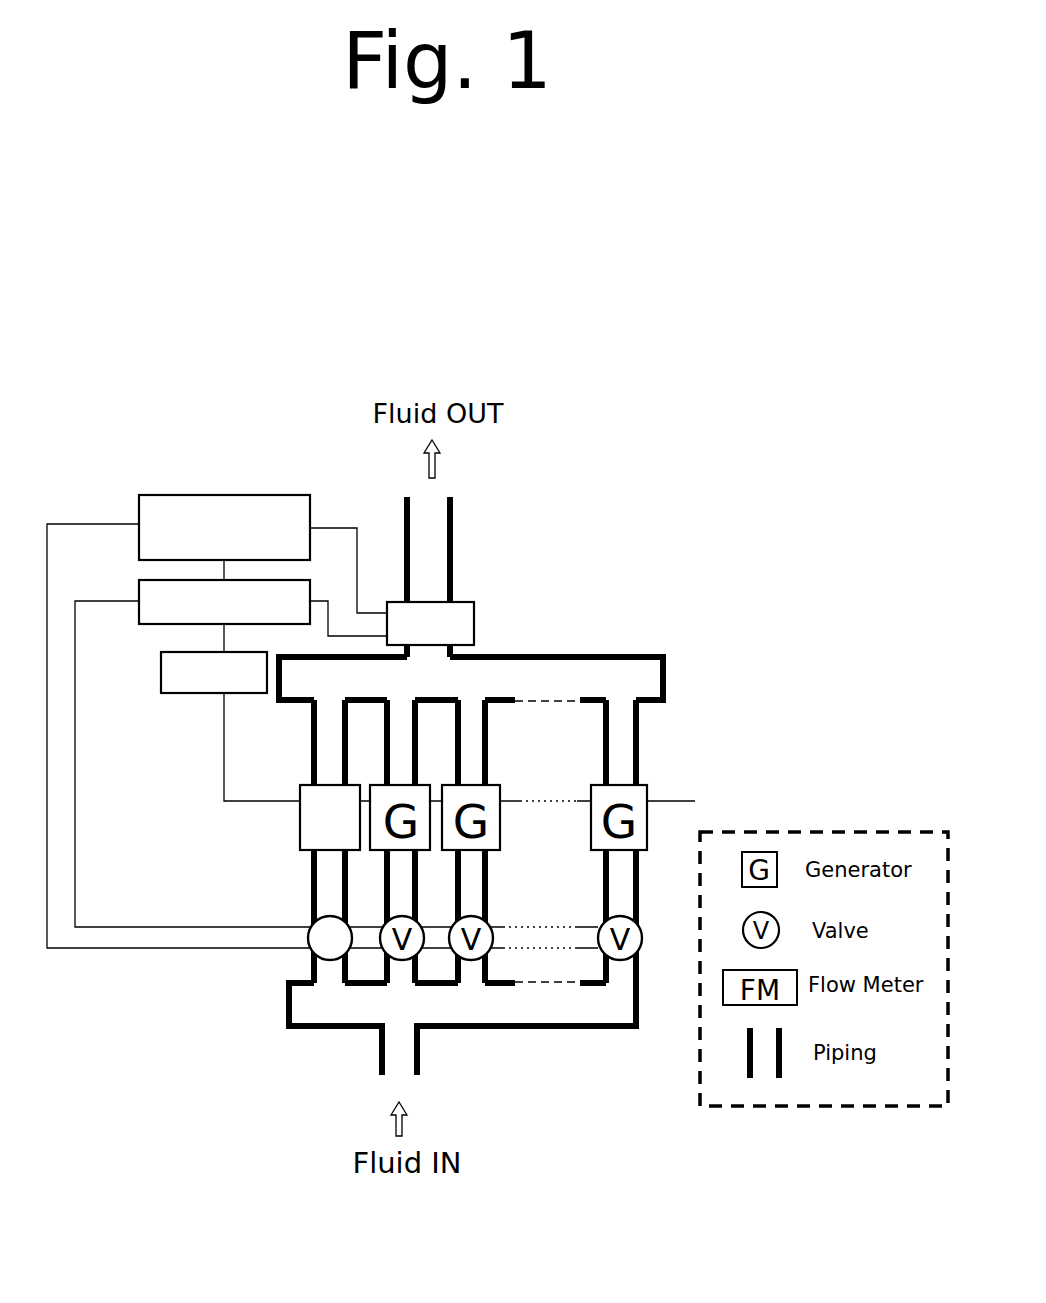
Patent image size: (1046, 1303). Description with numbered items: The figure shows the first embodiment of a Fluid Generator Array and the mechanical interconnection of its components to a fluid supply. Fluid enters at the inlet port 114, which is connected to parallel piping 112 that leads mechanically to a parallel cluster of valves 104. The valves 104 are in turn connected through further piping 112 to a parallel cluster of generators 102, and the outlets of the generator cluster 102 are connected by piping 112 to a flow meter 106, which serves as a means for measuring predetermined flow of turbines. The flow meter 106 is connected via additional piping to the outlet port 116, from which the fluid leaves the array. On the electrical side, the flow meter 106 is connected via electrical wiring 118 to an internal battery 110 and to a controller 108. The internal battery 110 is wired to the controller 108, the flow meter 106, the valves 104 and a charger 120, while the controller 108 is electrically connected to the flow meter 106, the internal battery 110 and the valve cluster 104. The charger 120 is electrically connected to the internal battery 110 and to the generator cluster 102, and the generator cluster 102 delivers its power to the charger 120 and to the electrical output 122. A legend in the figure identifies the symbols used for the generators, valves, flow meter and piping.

The generators 102 is at (290, 843).
The valves 104 is at (307, 953).
The flow meter 106 is at (474, 628).
The controller 108 is at (225, 488).
The internal battery 110 is at (155, 630).
The piping 112 is at (583, 1040).
The inlet port 114 is at (430, 1057).
The outlet port 116 is at (467, 542).
The electrical wiring 118 is at (83, 847).
The charger 120 is at (187, 700).
The electrical output 122 is at (682, 797).